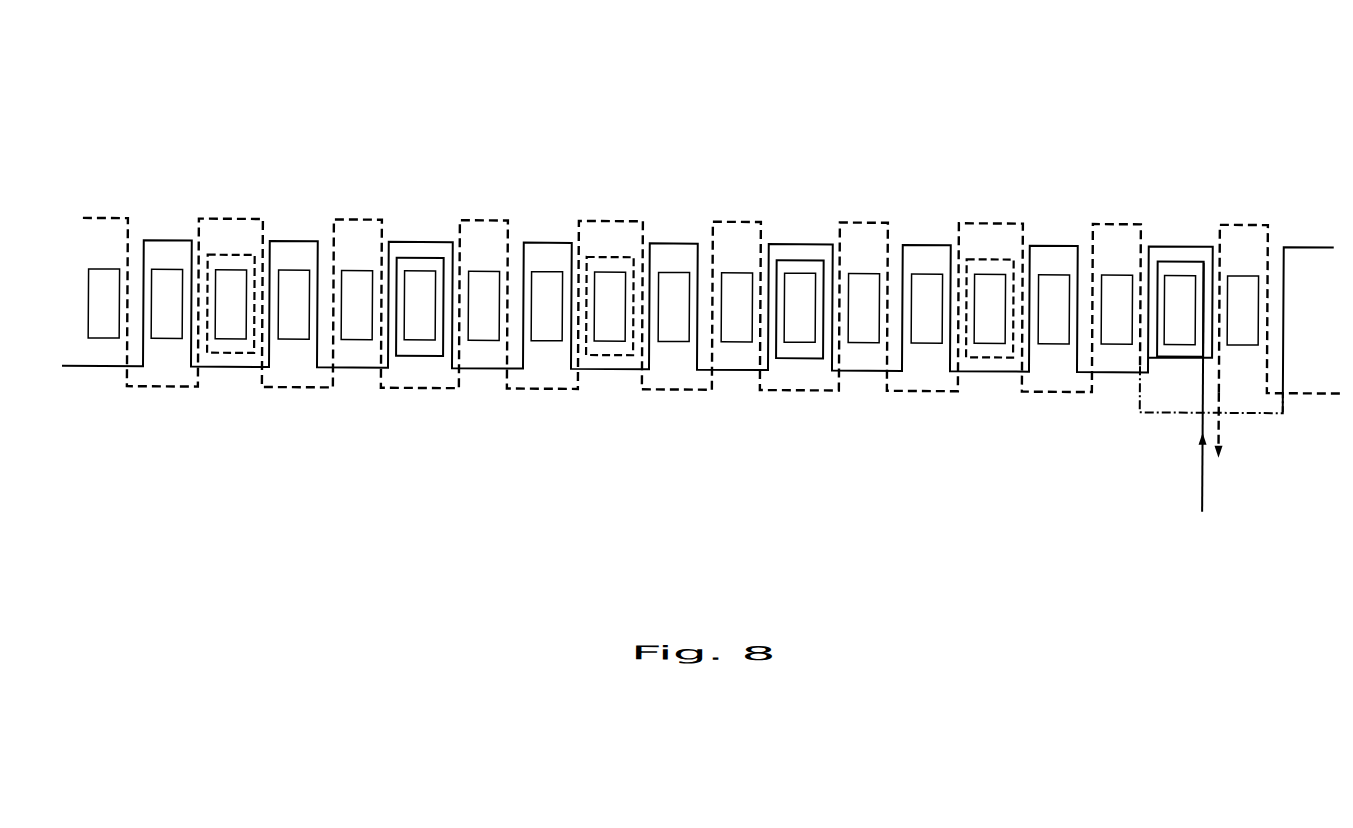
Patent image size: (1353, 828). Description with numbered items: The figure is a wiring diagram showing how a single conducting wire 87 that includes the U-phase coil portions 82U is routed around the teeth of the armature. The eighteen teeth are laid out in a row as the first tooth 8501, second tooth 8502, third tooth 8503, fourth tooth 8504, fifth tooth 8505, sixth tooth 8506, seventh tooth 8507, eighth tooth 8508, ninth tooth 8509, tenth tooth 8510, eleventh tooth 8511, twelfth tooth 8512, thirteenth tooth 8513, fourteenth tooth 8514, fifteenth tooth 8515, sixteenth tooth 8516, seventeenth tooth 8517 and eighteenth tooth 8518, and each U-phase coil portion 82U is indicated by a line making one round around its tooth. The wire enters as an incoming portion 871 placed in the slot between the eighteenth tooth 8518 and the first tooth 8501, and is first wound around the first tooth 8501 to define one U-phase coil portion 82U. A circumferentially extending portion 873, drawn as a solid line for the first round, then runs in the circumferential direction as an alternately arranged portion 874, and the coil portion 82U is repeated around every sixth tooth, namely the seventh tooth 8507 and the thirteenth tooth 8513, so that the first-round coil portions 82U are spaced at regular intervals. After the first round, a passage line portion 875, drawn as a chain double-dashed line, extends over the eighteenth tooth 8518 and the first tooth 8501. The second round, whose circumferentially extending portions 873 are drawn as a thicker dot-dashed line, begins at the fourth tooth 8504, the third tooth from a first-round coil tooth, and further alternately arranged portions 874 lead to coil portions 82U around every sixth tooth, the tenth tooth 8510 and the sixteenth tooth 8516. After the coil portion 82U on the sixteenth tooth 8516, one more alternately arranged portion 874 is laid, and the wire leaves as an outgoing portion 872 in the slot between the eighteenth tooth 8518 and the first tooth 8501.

The first tooth 8501 is at (1181, 283).
The second tooth 8502 is at (1118, 284).
The third tooth 8503 is at (1055, 284).
The fourth tooth 8504 is at (991, 285).
The fifth tooth 8505 is at (928, 285).
The sixth tooth 8506 is at (865, 285).
The seventh tooth 8507 is at (801, 286).
The eighth tooth 8508 is at (738, 286).
The ninth tooth 8509 is at (675, 286).
The tenth tooth 8510 is at (611, 287).
The eleventh tooth 8511 is at (548, 287).
The twelfth tooth 8512 is at (485, 288).
The thirteenth tooth 8513 is at (422, 288).
The fourteenth tooth 8514 is at (358, 288).
The fifteenth tooth 8515 is at (295, 289).
The sixteenth tooth 8516 is at (232, 289).
The seventeenth tooth 8517 is at (168, 290).
The eighteenth tooth 8518 is at (105, 290).
The U-phase coil portion 82U is at (237, 352).
The circumferentially extending portion 873 is at (891, 218).
The alternately arranged portion 874 is at (143, 367).
The passage line portion 875 is at (1257, 411).
The incoming portion 871 is at (1200, 455).
The outgoing portion 872 is at (1222, 423).
The conducting wire 87 is at (1199, 493).